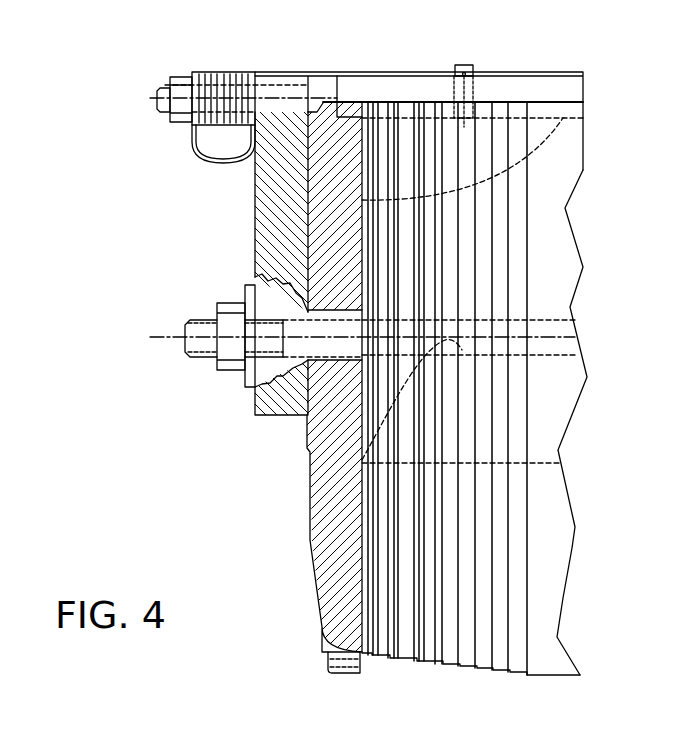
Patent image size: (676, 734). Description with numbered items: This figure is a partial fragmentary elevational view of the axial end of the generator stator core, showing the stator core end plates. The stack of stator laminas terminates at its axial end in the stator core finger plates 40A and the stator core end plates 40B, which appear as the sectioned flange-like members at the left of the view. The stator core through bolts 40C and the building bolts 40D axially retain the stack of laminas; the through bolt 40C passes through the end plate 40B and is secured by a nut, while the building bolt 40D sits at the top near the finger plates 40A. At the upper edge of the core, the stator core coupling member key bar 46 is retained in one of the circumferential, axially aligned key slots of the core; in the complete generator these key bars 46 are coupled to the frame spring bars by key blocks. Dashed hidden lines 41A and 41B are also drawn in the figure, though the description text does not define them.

The stator core finger plates 40A is at (333, 602).
The stator core end plates 40B is at (262, 414).
The stator core through bolts 40C is at (185, 338).
The building bolts 40D is at (158, 102).
The hidden flow path 41A is at (362, 460).
The hidden flow path 41B is at (362, 200).
The stator core coupling member key bars 46 is at (372, 90).